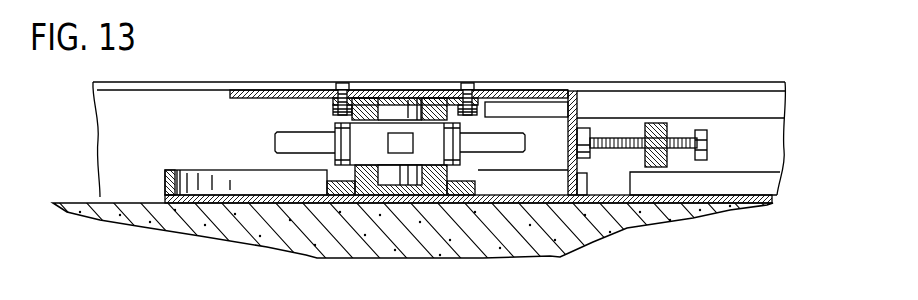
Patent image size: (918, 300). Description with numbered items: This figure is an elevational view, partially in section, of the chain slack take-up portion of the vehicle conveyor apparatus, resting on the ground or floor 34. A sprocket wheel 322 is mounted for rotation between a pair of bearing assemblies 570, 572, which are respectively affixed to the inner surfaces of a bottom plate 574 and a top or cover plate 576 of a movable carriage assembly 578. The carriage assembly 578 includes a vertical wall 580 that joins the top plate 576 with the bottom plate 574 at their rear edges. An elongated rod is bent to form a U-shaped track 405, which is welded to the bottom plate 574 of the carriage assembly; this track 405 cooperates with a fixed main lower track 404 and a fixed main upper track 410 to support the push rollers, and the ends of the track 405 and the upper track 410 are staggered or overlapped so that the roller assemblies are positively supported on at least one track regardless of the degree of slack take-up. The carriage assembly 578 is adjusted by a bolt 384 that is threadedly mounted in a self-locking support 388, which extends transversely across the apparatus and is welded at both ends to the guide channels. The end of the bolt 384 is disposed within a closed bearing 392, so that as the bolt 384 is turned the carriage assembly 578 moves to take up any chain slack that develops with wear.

The floor 34 is at (118, 198).
The sprocket wheel 322 is at (276, 142).
The bolt 384 is at (684, 137).
The self-locking support 388 is at (655, 123).
The closed bearing 392 is at (588, 158).
The main lower track 404 is at (757, 173).
The U-shaped track 405 is at (183, 170).
The main upper track 410 is at (762, 106).
The bearing assembly 570 is at (340, 188).
The bearing assembly 572 is at (367, 102).
The bottom plate 574 is at (518, 204).
The top plate 576 is at (537, 90).
The carriage assembly 578 is at (584, 102).
The vertical wall 580 is at (581, 185).